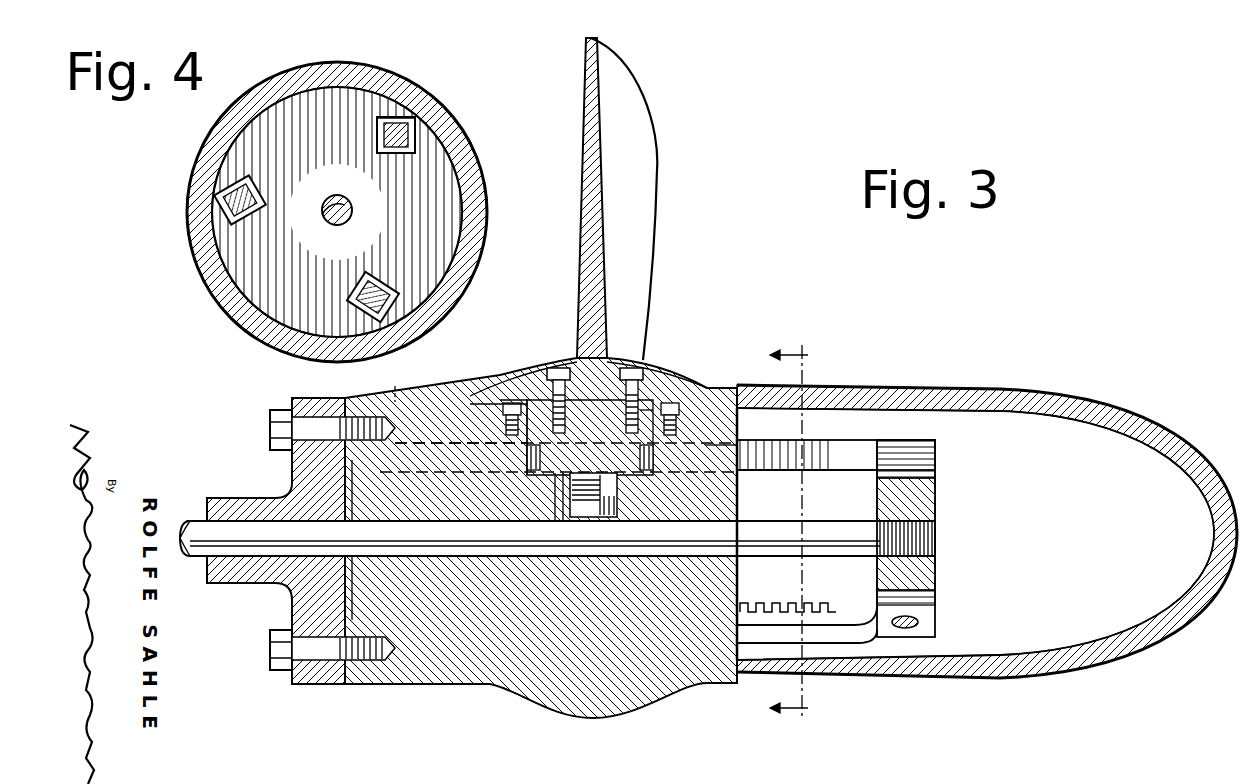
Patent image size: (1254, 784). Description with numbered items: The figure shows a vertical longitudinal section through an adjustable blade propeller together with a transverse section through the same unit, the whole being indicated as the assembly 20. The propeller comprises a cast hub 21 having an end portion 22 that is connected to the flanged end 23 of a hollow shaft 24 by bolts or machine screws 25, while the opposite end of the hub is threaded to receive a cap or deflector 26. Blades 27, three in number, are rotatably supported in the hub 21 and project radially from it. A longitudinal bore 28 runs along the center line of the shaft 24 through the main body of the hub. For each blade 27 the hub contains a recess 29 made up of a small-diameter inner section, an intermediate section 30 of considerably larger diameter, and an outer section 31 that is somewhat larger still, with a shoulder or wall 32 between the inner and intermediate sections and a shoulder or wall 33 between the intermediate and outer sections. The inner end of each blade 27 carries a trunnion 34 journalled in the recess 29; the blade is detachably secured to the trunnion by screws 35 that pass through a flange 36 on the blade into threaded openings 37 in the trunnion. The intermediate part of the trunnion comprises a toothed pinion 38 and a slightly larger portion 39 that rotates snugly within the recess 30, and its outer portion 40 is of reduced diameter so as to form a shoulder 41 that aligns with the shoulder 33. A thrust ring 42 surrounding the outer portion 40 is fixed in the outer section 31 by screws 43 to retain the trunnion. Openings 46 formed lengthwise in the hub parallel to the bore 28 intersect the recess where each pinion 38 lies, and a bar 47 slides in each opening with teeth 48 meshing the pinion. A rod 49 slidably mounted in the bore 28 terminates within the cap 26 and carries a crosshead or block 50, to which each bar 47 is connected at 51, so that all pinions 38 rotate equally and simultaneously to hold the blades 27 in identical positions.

In FIG. 3, the propeller hub assembly 20 is at (725, 395).
In FIG. 4, the hub 21 is at (265, 143).
In FIG. 3, the hub 21 is at (525, 696).
In FIG. 3, the end portion 22 is at (343, 398).
In FIG. 3, the flanged end 23 is at (315, 684).
In FIG. 3, the hollow shaft 24 is at (236, 585).
In FIG. 3, the bolts or machine screws 25 is at (272, 412).
In FIG. 4, the cap or deflector 26 is at (332, 70).
In FIG. 3, the cap or deflector 26 is at (1075, 403).
In FIG. 3, the blades 27 is at (586, 172).
In FIG. 4, the longitudinal bore 28 is at (349, 206).
In FIG. 3, the longitudinal bore 28 is at (470, 556).
In FIG. 3, the recess 29 is at (603, 506).
In FIG. 3, the intermediate section 30 is at (705, 445).
In FIG. 3, the outer section 31 is at (520, 405).
In FIG. 3, the shoulder or wall 32 is at (555, 505).
In FIG. 3, the shoulder or wall 33 is at (470, 404).
In FIG. 3, the trunnion 34 is at (807, 495).
In FIG. 3, the screws 35 is at (640, 410).
In FIG. 3, the flange 36 is at (555, 368).
In FIG. 3, the openings 37 is at (590, 437).
In FIG. 3, the pinion 38 is at (836, 441).
In FIG. 3, the portion 39 is at (670, 403).
In FIG. 3, the outer portion 40 is at (632, 368).
In FIG. 3, the shoulder 41 is at (590, 458).
In FIG. 3, the thrust ring 42 is at (512, 400).
In FIG. 3, the screws 43 is at (510, 403).
In FIG. 4, the openings 46 is at (385, 135).
In FIG. 3, the openings 46 is at (449, 402).
In FIG. 4, the bar 47 is at (412, 122).
In FIG. 3, the bar 47 is at (838, 453).
In FIG. 4, the teeth 48 is at (397, 118).
In FIG. 3, the teeth 48 is at (807, 603).
In FIG. 4, the actuator or rod 49 is at (322, 215).
In FIG. 3, the actuator or rod 49 is at (192, 521).
In FIG. 3, the crosshead or block 50 is at (935, 465).
In FIG. 3, the connection 51 is at (918, 622).